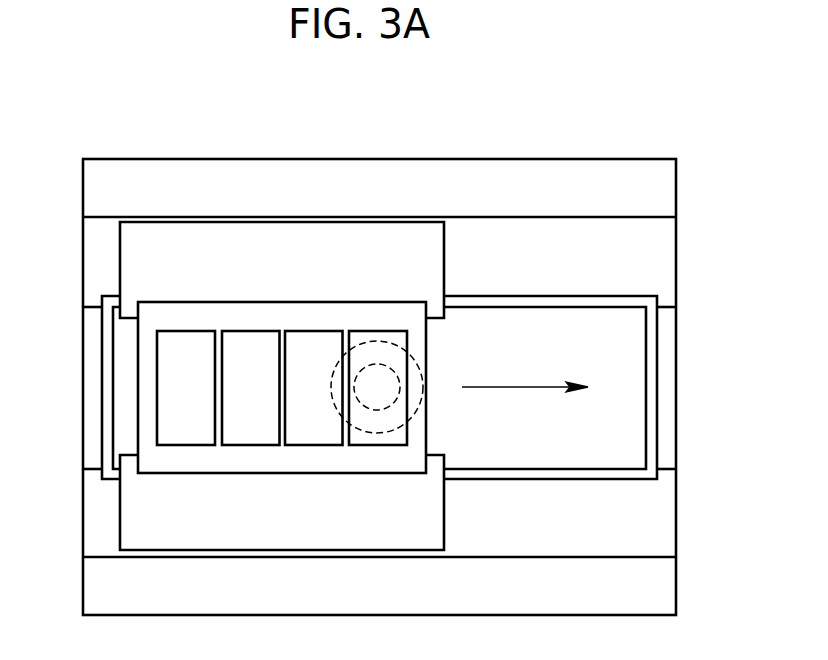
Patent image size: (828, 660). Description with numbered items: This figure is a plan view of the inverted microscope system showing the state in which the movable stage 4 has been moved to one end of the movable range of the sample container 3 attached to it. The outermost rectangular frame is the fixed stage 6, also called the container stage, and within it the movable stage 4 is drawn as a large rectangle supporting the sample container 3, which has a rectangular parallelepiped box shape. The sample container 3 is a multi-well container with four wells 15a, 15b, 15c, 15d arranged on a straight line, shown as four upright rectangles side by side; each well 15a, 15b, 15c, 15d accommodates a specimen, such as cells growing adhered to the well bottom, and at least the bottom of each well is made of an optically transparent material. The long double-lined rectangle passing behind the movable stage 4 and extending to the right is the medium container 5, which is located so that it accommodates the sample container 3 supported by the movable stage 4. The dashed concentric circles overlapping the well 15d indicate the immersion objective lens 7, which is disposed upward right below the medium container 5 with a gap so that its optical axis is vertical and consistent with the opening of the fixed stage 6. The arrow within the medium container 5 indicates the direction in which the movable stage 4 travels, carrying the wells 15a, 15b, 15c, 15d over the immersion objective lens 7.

The sample container 3 is at (287, 302).
The movable stage 4 is at (120, 262).
The medium container 5 is at (657, 384).
The fixed stage 6 is at (432, 159).
The immersion objective lens 7 is at (418, 358).
The well 15a is at (158, 434).
The well 15b is at (222, 432).
The well 15c is at (285, 432).
The well 15d is at (349, 432).